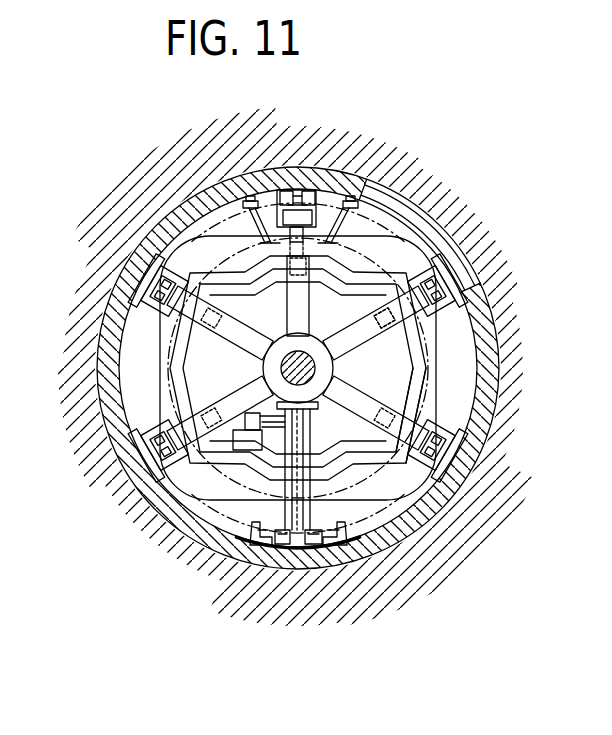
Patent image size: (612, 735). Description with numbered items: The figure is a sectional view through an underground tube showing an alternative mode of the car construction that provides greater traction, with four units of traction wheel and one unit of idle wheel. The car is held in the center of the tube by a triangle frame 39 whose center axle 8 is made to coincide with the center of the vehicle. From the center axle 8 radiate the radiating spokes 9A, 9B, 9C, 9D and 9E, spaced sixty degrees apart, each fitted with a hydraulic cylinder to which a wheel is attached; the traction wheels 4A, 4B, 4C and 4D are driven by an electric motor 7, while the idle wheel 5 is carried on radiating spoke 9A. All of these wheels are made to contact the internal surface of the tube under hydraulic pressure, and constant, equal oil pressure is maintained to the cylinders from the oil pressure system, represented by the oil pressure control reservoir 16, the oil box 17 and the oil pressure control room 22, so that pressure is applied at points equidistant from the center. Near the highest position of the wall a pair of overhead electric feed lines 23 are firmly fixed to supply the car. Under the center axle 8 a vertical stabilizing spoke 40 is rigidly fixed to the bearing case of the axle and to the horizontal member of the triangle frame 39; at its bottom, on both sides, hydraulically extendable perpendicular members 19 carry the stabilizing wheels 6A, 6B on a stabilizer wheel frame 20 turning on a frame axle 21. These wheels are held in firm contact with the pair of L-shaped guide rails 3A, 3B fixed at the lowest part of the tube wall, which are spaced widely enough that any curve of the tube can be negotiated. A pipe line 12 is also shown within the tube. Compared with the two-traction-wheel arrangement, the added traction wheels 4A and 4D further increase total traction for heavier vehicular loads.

The idle wheel 5 is at (312, 191).
The overhead electric feed line 23 is at (240, 198).
The electric motor 7 is at (160, 258).
The traction wheel 4A is at (146, 284).
The traction wheel 4B is at (140, 478).
The traction wheel 4C is at (445, 478).
The traction wheel 4D is at (430, 262).
The center axle 8 is at (300, 352).
The radiating spoke 9A is at (305, 288).
The radiating spoke 9B is at (190, 378).
The radiating spoke 9C is at (355, 400).
The radiating spoke 9D is at (347, 335).
The radial arm 9E is at (258, 340).
The pipe line 12 is at (398, 381).
The oil pressure control reservoir 16 is at (242, 388).
The triangle frame 39 is at (402, 362).
The oil box 17 is at (243, 448).
The stabilizer wheel frame 20 is at (267, 543).
The stabilizing spoke 40 is at (307, 488).
The guide rail 3A is at (255, 538).
The guide rail 3B is at (340, 537).
The perpendicular member 19 is at (283, 556).
The frame axle 21 is at (262, 555).
The oil pressure control room 22 is at (312, 556).
The stabilizing wheel 6A is at (252, 572).
The stabilizing wheel 6B is at (350, 556).